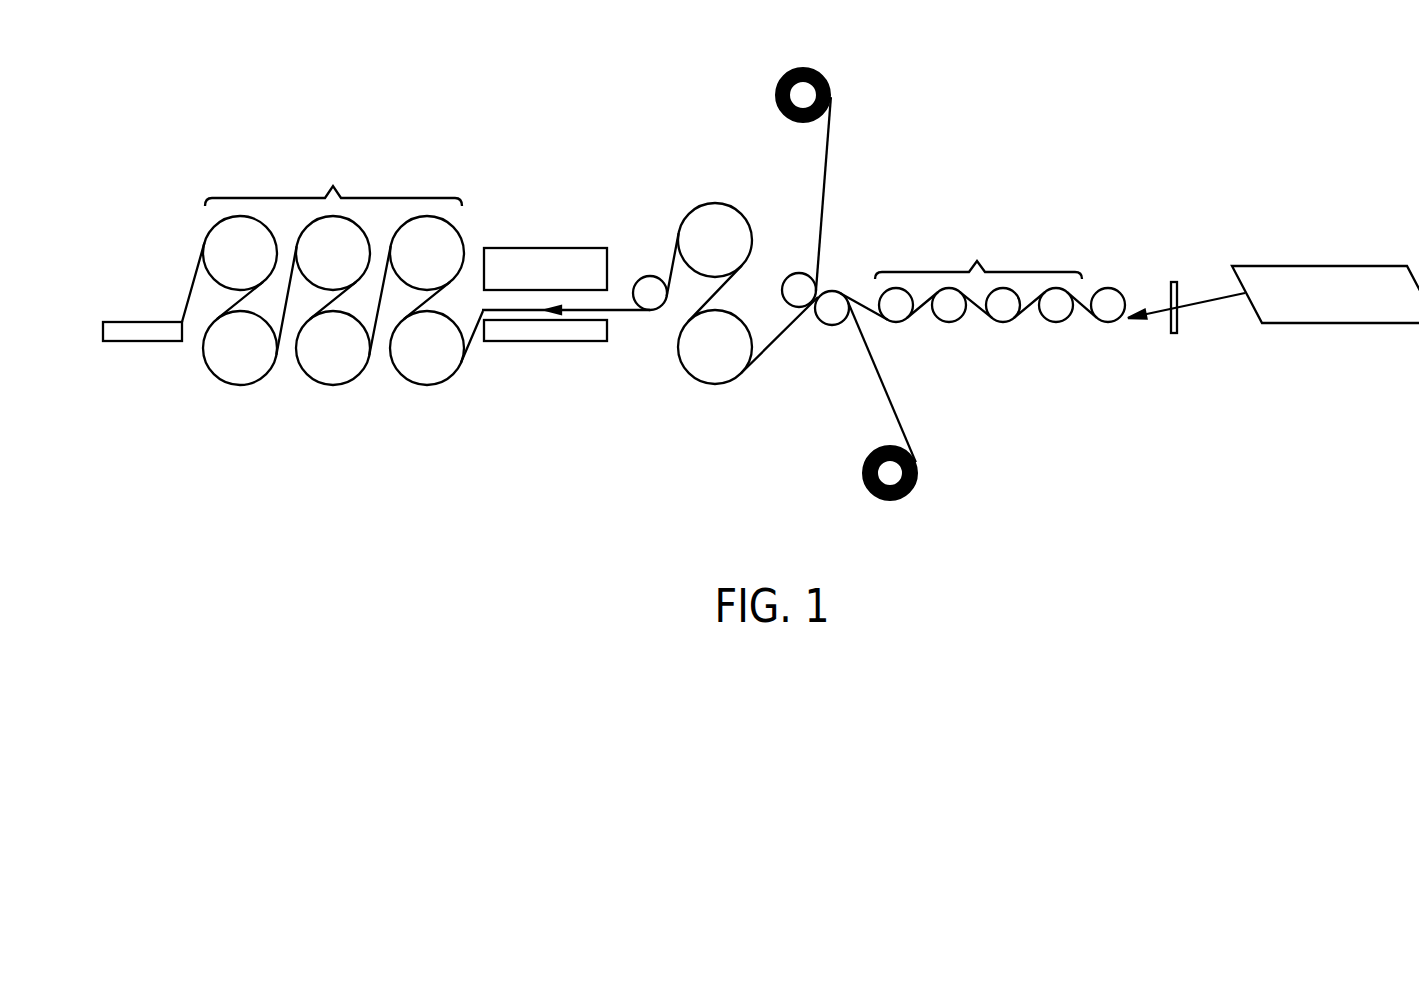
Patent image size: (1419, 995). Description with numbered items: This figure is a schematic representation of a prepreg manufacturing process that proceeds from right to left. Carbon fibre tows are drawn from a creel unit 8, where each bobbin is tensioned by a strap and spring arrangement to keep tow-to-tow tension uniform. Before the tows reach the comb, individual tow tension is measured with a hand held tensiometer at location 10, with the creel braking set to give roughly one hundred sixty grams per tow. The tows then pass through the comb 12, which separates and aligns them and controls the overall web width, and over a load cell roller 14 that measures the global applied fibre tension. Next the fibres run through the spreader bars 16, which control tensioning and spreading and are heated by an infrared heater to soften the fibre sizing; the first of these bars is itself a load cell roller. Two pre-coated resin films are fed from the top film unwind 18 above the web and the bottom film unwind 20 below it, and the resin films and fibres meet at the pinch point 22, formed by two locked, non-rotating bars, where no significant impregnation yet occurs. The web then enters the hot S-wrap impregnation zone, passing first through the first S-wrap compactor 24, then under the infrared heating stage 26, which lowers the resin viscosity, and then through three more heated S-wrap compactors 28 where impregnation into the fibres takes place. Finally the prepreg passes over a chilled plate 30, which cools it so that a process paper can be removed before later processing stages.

The creel unit 8 is at (1353, 266).
The tow tension measurement location 10 is at (1208, 305).
The comb 12 is at (1178, 285).
The load cell roller 14 is at (1108, 288).
The spreader bars 16 is at (978, 278).
The top film unwind 18 is at (775, 95).
The bottom film unwind 20 is at (862, 473).
The pinch point 22 is at (832, 325).
The first S-wrap compactor 24 is at (713, 203).
The infrared heating stage 26 is at (556, 342).
The S-wrap compactors 28 is at (332, 271).
The chilled plate 30 is at (142, 341).